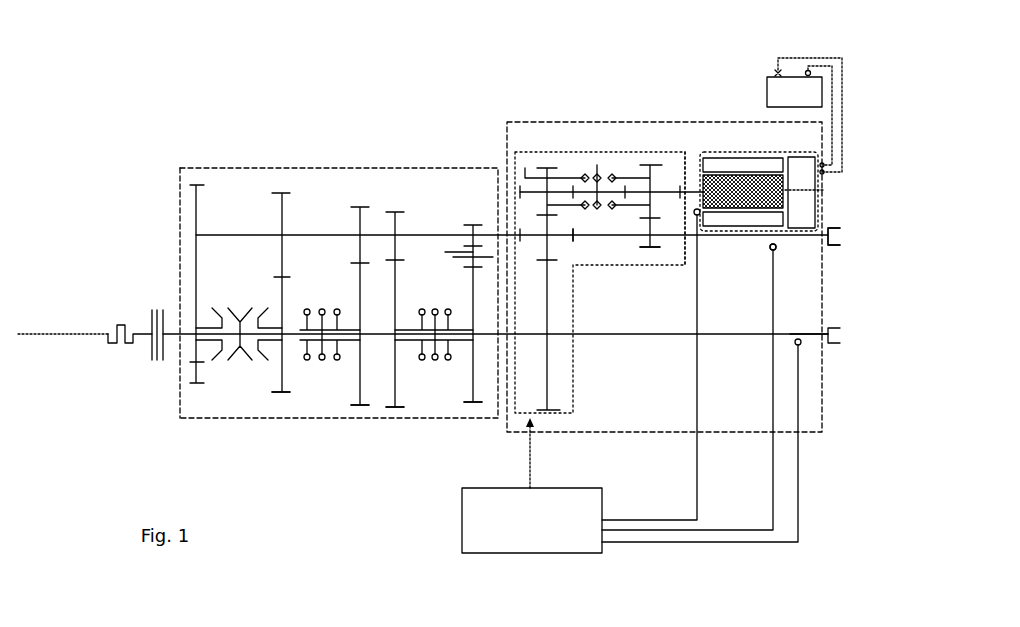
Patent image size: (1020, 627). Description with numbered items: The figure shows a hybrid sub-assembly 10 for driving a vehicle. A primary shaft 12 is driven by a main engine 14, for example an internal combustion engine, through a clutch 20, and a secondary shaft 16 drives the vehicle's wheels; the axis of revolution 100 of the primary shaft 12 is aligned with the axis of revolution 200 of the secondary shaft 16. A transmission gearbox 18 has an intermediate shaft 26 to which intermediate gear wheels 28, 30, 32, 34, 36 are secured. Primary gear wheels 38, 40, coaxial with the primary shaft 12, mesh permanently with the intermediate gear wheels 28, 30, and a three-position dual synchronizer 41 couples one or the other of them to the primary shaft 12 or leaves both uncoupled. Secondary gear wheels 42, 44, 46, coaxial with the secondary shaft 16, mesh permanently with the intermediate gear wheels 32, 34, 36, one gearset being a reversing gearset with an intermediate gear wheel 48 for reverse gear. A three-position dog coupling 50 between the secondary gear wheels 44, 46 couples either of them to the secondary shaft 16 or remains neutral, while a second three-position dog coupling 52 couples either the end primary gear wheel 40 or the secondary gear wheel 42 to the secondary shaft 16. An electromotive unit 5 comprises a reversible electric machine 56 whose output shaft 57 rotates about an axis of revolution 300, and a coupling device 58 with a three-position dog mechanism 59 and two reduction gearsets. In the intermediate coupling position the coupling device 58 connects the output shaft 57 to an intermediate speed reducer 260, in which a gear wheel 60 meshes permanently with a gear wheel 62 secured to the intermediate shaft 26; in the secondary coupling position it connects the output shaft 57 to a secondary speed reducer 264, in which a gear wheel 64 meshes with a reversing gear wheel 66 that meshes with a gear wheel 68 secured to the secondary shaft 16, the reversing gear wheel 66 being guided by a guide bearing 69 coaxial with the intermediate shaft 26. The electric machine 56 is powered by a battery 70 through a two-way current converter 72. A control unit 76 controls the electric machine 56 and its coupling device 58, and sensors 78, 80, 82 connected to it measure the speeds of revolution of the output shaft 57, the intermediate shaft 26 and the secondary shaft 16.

The axis of revolution of the primary shaft 100 is at (61, 334).
The main engine 14 is at (118, 325).
The clutch 20 is at (152, 323).
The primary shaft 12 is at (178, 262).
The transmission gearbox 18 is at (312, 168).
The secondary shaft 16 is at (490, 334).
The intermediate shaft 26 is at (245, 235).
The intermediate gear wheel 28 is at (200, 210).
The intermediate gear wheel 30 is at (280, 210).
The intermediate gear wheel 32 is at (358, 218).
The intermediate gear wheel 34 is at (397, 217).
The intermediate gear wheel 36 is at (465, 225).
The primary gear wheel 38 is at (190, 362).
The end primary gear wheel 40 is at (283, 373).
The three-position dual synchronizer 41 is at (240, 368).
The secondary gear wheel 42 is at (360, 375).
The secondary gear wheel 44 is at (395, 377).
The secondary gear wheel 46 is at (473, 375).
The intermediate gear wheel of the reversing gearset 48 is at (445, 252).
The three-position dog coupling 50 is at (435, 368).
The three-position dog coupling 52 is at (322, 368).
The electromotive unit 5 is at (563, 122).
The gear wheel 64 is at (523, 152).
The gear wheel 60 is at (685, 265).
The guide bearing 69 is at (532, 232).
The output shaft 57 is at (687, 192).
The three-position dog mechanism 59 is at (597, 160).
The coupling device 58 is at (633, 165).
The gear wheel 62 is at (650, 247).
The reversing gear wheel 66 is at (575, 250).
The gear wheel 68 is at (548, 388).
The intermediate speed reducer 260 is at (632, 242).
The secondary speed reducer 264 is at (569, 295).
The control unit 76 is at (522, 533).
The sensor 80 is at (778, 247).
The reversible electric machine 56 is at (700, 150).
The two-way current converter 72 is at (812, 168).
The axis of revolution of the output shaft 300 is at (823, 190).
The battery 70 is at (802, 90).
The hybrid sub-assembly 10 is at (718, 62).
The sensor 78 is at (828, 228).
The sensor 82 is at (806, 335).
The axis of revolution of the secondary shaft 200 is at (840, 334).